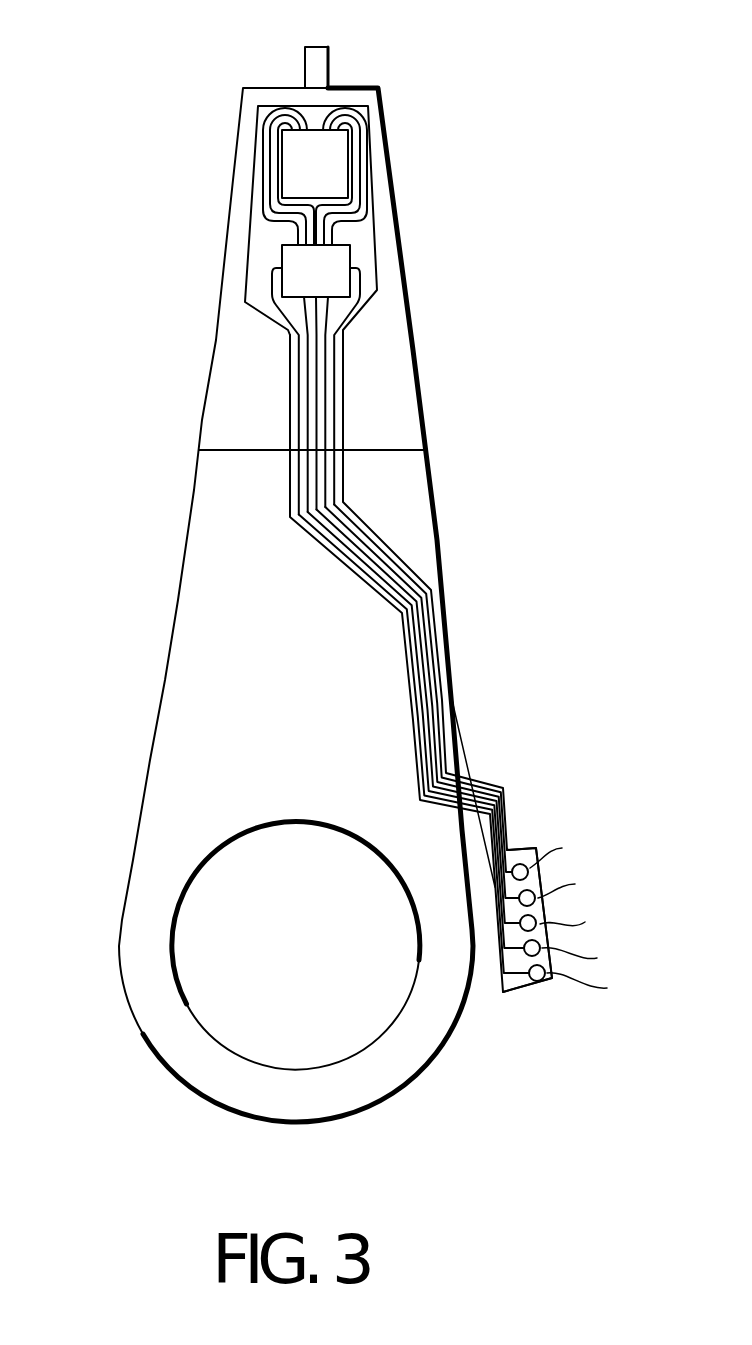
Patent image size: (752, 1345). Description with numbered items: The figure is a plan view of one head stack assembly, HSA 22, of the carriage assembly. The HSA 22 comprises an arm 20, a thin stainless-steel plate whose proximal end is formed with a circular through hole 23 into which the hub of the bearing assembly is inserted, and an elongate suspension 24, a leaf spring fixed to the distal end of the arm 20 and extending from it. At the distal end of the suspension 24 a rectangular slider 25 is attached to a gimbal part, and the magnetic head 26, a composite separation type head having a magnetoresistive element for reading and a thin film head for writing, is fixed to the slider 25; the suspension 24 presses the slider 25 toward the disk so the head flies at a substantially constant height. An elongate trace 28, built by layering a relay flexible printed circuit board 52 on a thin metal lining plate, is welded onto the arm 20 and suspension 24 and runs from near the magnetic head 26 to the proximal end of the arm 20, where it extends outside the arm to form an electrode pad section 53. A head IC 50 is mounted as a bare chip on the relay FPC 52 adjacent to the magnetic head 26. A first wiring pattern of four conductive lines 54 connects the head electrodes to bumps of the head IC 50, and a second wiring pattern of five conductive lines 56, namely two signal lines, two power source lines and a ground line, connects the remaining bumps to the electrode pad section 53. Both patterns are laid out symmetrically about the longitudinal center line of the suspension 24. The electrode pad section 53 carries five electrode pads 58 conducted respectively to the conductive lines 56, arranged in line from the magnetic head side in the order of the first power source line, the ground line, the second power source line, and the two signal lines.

The arm 20 is at (182, 645).
The HSA 22 is at (141, 471).
The circular through hole 23 is at (218, 1043).
The suspension 24 is at (403, 383).
The slider 25 is at (333, 158).
The magnetic head 26 is at (318, 125).
The trace 28 is at (328, 472).
The head IC 50 is at (327, 263).
The relay flexible printed circuit board 52 is at (377, 292).
The electrode pad section 53 is at (511, 1022).
The conductive lines 54 is at (385, 170).
The conductive lines 56 is at (420, 623).
The electrode pads 58 is at (524, 868).